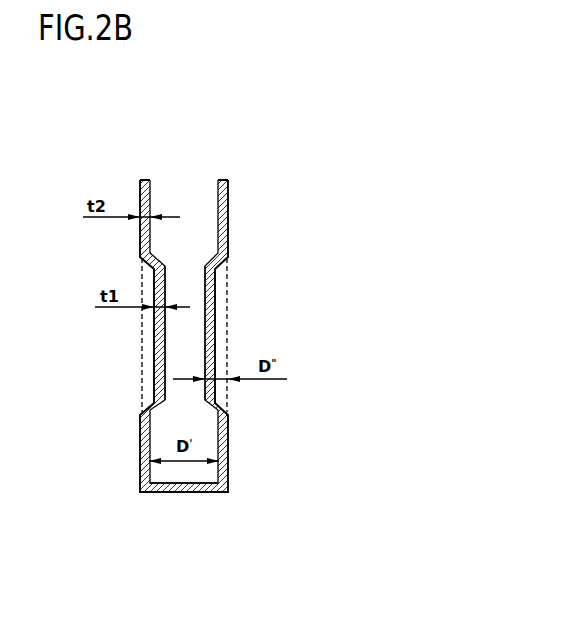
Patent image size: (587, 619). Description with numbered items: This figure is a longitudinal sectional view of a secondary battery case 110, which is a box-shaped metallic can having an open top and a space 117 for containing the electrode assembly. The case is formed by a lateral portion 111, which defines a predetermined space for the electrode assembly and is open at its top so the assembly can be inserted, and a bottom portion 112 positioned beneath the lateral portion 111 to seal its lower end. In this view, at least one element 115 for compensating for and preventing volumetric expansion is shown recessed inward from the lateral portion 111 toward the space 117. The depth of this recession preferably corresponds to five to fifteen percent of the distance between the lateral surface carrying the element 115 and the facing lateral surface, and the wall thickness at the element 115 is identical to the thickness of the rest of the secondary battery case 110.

The secondary battery case 110 is at (305, 140).
The lateral portion 111 is at (228, 208).
The bottom portion 112 is at (193, 493).
The element for compensating for and preventing volumetric expansion 115 is at (222, 332).
The space for containing the electrode assembly 117 is at (177, 190).